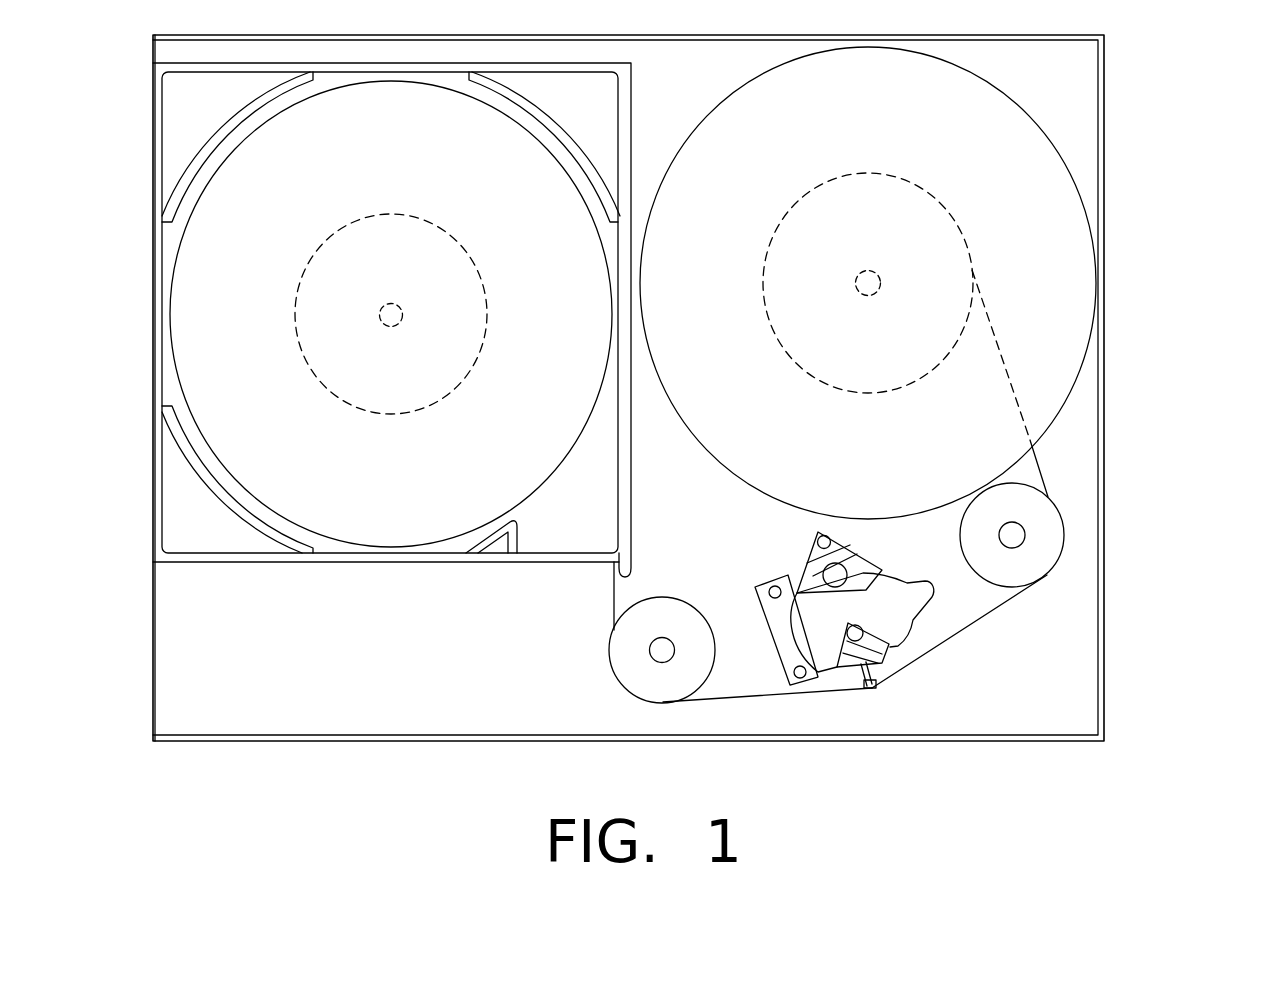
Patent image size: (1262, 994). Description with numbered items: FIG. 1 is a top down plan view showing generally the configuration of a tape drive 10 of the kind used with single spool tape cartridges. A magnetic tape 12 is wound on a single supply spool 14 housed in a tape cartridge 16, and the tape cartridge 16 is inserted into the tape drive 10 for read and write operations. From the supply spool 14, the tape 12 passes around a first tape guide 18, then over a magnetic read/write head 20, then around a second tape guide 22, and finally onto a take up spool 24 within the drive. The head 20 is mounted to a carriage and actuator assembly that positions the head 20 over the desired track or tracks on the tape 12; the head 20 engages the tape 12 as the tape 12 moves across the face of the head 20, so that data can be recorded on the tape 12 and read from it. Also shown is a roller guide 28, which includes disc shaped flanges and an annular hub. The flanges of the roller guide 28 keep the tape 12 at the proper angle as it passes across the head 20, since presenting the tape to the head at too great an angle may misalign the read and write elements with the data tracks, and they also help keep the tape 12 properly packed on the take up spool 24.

The tape drive 10 is at (1152, 518).
The magnetic tape 12 is at (962, 632).
The supply spool 14 is at (538, 492).
The tape cartridge 16 is at (634, 84).
The first tape guide 18 is at (623, 668).
The magnetic read/write head 20 is at (872, 689).
The second tape guide 22 is at (1036, 573).
The take up spool 24 is at (707, 445).
The roller guide 28 is at (783, 558).